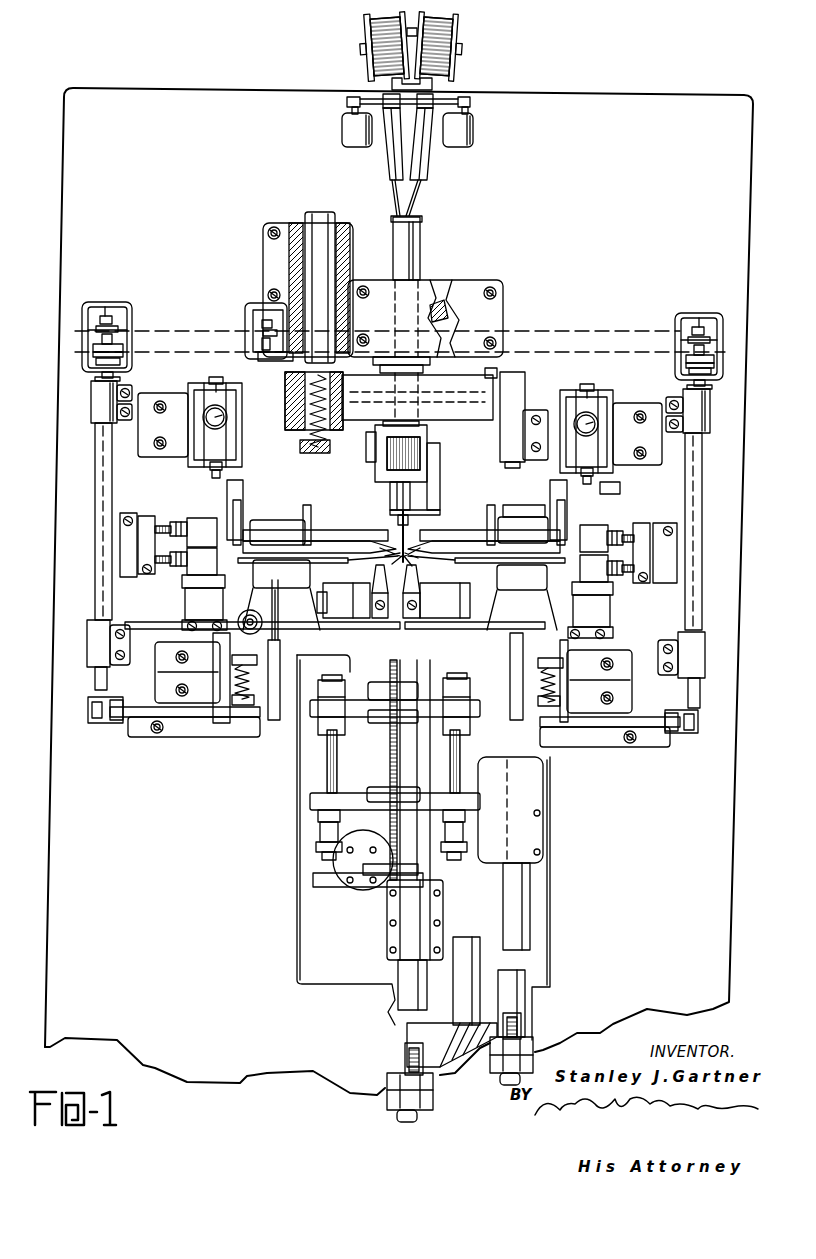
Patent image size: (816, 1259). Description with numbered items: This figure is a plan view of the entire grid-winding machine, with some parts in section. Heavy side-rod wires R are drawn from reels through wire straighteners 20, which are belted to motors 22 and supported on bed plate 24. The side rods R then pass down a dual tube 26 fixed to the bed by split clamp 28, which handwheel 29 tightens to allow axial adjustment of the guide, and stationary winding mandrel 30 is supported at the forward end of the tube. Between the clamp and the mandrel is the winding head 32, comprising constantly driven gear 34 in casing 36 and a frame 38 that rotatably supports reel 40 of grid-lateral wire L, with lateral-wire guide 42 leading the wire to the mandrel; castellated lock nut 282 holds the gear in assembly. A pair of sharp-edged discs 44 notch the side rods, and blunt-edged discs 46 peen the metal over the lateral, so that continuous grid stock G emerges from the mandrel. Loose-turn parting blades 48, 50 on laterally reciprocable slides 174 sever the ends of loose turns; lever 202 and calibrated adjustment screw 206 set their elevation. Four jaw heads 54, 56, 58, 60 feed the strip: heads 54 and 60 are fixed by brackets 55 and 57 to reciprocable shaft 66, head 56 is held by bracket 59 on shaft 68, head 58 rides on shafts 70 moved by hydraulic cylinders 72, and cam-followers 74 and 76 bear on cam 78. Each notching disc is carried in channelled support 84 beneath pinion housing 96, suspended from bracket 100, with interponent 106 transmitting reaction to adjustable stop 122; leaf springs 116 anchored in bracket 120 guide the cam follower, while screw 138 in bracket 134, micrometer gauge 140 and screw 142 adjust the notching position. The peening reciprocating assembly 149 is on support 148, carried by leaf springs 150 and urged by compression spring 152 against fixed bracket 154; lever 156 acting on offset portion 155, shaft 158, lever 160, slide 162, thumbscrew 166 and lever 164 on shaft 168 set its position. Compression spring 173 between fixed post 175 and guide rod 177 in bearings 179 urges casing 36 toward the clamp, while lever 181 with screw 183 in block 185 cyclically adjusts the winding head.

The wire straighteners 20 is at (400, 165).
The motors 22 is at (473, 135).
The bed plate 24 is at (604, 173).
The dual tube 26 is at (398, 240).
The split clamp 28 is at (508, 308).
The handwheel 29 is at (450, 285).
The winding mandrel 30 is at (402, 548).
The winding head 32 is at (455, 462).
The gear 34 is at (458, 386).
The casing 36 is at (455, 420).
The frame 38 is at (372, 450).
The reel 40 is at (392, 497).
The lateral-wire guide 42 is at (418, 520).
The sharp-edged discs 44 is at (375, 542).
The blunt-edged discs 46 is at (390, 560).
The loose-turn parting blade 48 is at (395, 630).
The loose-turn parting blade 50 is at (445, 610).
The head 54 is at (360, 685).
The bracket 55 is at (428, 745).
The head 56 is at (330, 770).
The bracket 57 is at (388, 912).
The head 58 is at (368, 795).
The bracket 59 is at (498, 837).
The head 60 is at (325, 880).
The longitudinally reciprocable shaft 66 is at (408, 978).
The longitudinally reciprocable shaft 68 is at (520, 918).
The shafts 70 is at (297, 745).
The hydraulic cylinders 72 is at (455, 680).
The cam-follower 74 is at (436, 1098).
The cam-follower 76 is at (482, 1060).
The cam 78 is at (436, 1043).
The channelled support 84 is at (399, 531).
The pinion housing 96 is at (522, 509).
The bracket 100 is at (244, 505).
The interponent 106 is at (242, 520).
The leaf springs 116 is at (230, 490).
The bracket 120 is at (620, 486).
The adjustable stop 122 is at (146, 530).
The bracket 134 is at (182, 397).
The screw 138 is at (216, 383).
The micrometer gauge 140 is at (228, 418).
The screw 142 is at (224, 462).
The support 148 is at (306, 660).
The peening reciprocating assembly 149 is at (400, 595).
The leaf springs 150 is at (566, 650).
The compression spring 152 is at (238, 710).
The fixed bracket 154 is at (210, 660).
The offset portion 155 is at (240, 738).
The lever 156 is at (330, 752).
The shaft 158 is at (648, 745).
The lever 160 is at (100, 725).
The slide 162 is at (92, 590).
The lever 164 is at (84, 331).
The adjustable thumbscrew 166 is at (98, 357).
The shaft 168 is at (192, 318).
The compression spring 173 is at (292, 434).
The laterally reciprocable slides 174 is at (420, 605).
The fixed post 175 is at (314, 454).
The guide rod 177 is at (314, 220).
The stationary bearings 179 is at (265, 244).
The lever 181 is at (256, 304).
The screw 183 is at (262, 323).
The block 185 is at (264, 338).
The lever 202 is at (282, 624).
The calibrated adjustment screw 206 is at (245, 612).
The castellated lock nut 282 is at (400, 350).
The grid stock strip G is at (415, 648).
The grid-lateral wire L is at (340, 492).
The side-rod wires R is at (412, 200).